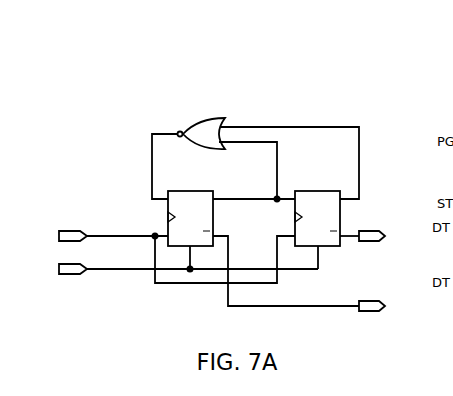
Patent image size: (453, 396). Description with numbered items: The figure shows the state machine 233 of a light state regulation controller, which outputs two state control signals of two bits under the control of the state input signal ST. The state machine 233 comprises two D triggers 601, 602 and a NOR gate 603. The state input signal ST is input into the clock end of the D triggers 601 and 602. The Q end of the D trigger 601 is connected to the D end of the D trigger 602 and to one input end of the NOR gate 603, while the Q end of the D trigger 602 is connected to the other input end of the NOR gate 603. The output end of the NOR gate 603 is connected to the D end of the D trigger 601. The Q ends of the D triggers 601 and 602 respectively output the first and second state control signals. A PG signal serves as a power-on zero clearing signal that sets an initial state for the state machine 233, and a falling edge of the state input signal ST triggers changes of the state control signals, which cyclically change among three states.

The state machine 233 is at (135, 16).
The D trigger 601 is at (168, 206).
The D trigger 602 is at (322, 191).
The NOR gate 603 is at (215, 114).